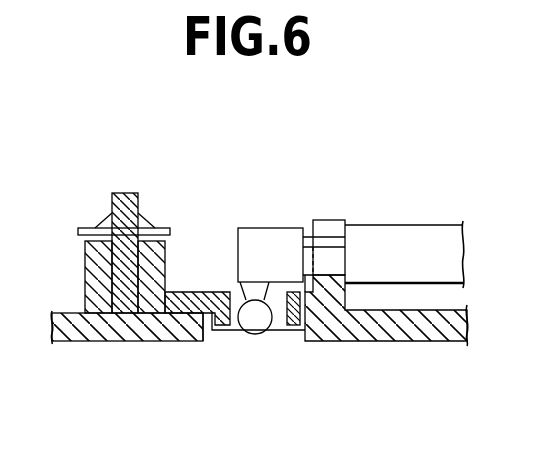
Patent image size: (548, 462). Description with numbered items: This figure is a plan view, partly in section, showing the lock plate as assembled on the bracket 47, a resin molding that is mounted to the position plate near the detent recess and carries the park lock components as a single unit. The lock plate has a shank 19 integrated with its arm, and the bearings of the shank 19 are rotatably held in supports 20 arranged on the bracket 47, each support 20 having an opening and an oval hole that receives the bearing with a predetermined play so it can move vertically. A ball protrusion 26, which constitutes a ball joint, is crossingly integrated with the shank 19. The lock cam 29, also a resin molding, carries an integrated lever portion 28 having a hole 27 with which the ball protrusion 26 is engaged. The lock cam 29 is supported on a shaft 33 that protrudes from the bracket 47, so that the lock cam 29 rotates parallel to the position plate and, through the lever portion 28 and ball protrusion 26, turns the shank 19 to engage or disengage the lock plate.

The shank 19 is at (388, 240).
The support 20 is at (328, 220).
The ball protrusion 26 is at (255, 323).
The hole 27 is at (282, 318).
The lever portion 28 is at (212, 342).
The lock cam 29 is at (165, 272).
The shaft 33 is at (122, 203).
The bracket 47 is at (108, 342).